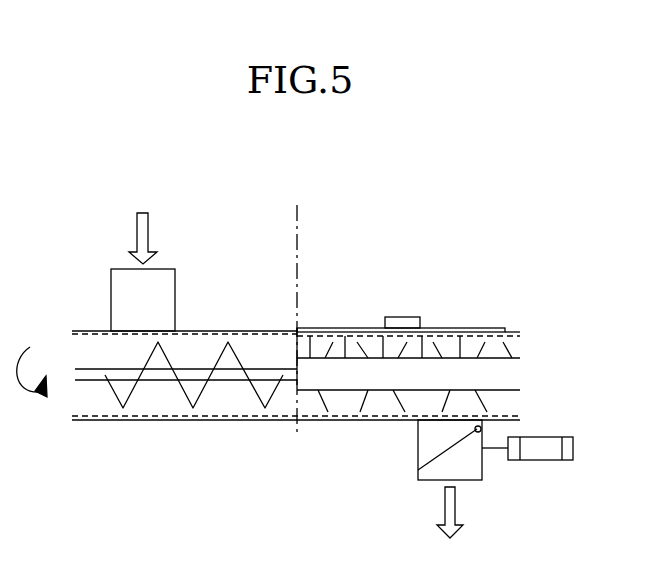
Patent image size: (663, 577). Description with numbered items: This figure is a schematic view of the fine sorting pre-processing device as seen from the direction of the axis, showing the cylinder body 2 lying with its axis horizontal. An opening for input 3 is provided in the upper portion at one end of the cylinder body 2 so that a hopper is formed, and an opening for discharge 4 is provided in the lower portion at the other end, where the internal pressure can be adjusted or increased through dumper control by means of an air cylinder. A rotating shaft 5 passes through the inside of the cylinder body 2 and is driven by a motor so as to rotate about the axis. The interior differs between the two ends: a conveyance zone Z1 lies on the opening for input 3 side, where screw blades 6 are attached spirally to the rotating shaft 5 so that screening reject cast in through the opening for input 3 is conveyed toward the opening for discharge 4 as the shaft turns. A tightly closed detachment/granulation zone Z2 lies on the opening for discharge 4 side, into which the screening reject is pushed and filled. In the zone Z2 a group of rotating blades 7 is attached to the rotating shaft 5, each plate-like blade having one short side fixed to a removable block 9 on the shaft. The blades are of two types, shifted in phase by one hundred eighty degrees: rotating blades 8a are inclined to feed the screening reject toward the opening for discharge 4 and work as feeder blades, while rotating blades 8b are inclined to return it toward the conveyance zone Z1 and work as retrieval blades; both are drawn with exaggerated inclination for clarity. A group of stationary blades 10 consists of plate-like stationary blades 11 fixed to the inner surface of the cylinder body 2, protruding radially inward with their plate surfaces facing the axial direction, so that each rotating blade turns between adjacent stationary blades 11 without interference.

The cylinder body 2 is at (512, 328).
The opening for input 3 is at (165, 300).
The opening for discharge 4 is at (477, 467).
The rotating shaft 5 is at (72, 378).
The screw blades 6 is at (138, 380).
The group of rotating blades 7 is at (390, 466).
The rotating blades (feeder blades) 8a is at (325, 398).
The rotating blades (retrieval blades) 8b is at (368, 400).
The block 9 is at (503, 380).
The group of stationary blades 10 is at (377, 281).
The stationary blades 11 is at (310, 350).
The conveyance zone Z1 is at (93, 403).
The detachment/granulation zone Z2 is at (310, 404).